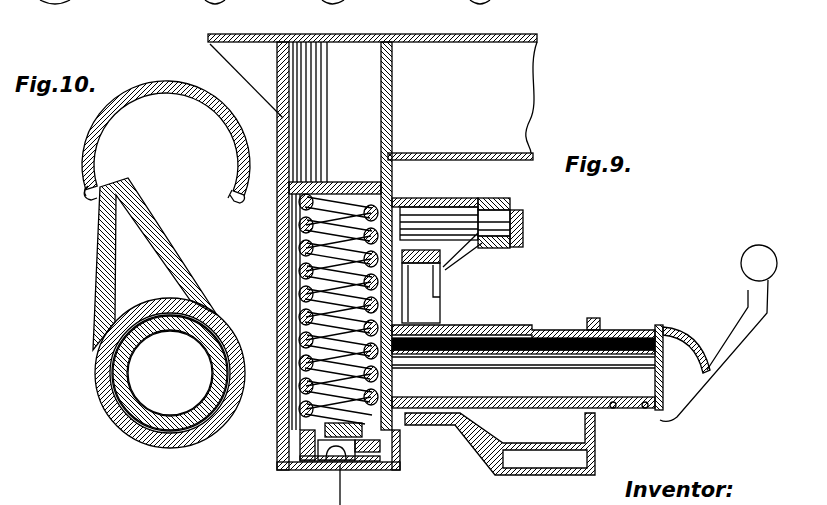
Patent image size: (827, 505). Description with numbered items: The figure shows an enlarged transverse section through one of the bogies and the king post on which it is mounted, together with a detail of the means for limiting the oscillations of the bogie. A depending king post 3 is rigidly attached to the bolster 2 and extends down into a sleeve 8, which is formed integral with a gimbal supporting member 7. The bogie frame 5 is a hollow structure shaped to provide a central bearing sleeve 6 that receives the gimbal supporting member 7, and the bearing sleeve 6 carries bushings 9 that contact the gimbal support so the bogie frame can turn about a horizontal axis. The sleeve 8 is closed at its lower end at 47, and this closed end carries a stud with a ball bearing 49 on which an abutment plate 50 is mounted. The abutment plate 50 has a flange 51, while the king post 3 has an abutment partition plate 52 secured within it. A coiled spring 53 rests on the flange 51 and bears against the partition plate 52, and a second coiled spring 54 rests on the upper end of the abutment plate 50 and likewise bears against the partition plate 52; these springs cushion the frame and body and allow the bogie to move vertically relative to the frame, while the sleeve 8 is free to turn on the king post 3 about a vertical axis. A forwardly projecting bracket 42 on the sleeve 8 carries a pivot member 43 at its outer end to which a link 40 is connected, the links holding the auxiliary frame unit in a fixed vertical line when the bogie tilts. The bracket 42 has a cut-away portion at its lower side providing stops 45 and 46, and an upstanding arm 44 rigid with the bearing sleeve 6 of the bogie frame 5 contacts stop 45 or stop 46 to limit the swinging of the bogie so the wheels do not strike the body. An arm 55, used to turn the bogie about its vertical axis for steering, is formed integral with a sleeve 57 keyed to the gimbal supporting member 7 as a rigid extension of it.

In FIG. 9, the bolster 2 is at (432, 23).
In FIG. 9, the king post 3 is at (290, 81).
In FIG. 9, the bogie frame 5 is at (497, 463).
In FIG. 9, the bearing sleeve 6 is at (483, 327).
In FIG. 10, the gimbal supporting member 7 is at (125, 367).
In FIG. 9, the gimbal supporting member 7 is at (492, 347).
In FIG. 10, the sleeve 8 is at (100, 387).
In FIG. 9, the sleeve 8 is at (283, 290).
In FIG. 10, the bushing 9 is at (112, 397).
In FIG. 9, the bushing 9 is at (440, 320).
In FIG. 9, the link 40 is at (493, 201).
In FIG. 10, the bracket 42 is at (183, 95).
In FIG. 9, the bracket 42 is at (435, 207).
In FIG. 9, the pivot member 43 is at (517, 208).
In FIG. 10, the upstanding arm 44 is at (151, 218).
In FIG. 10, the stop 45 is at (86, 192).
In FIG. 10, the stop 46 is at (223, 192).
In FIG. 9, the closed end 47 is at (377, 468).
In FIG. 9, the ball bearing 49 is at (300, 472).
In FIG. 9, the abutment plate 50 is at (365, 443).
In FIG. 9, the flange 51 is at (355, 463).
In FIG. 9, the abutment partition plate 52 is at (337, 180).
In FIG. 9, the coiled spring 53 is at (300, 250).
In FIG. 9, the second coiled spring 54 is at (382, 176).
In FIG. 9, the arm 55 is at (717, 310).
In FIG. 9, the sleeve 57 is at (620, 327).